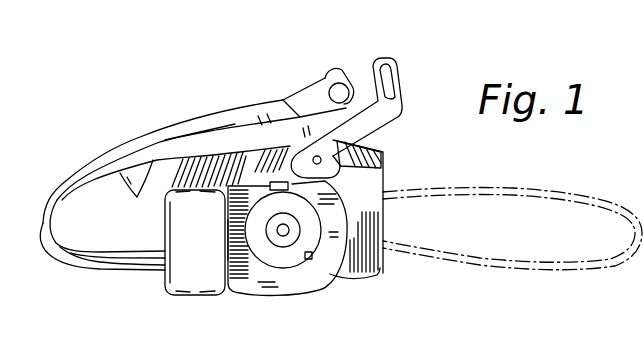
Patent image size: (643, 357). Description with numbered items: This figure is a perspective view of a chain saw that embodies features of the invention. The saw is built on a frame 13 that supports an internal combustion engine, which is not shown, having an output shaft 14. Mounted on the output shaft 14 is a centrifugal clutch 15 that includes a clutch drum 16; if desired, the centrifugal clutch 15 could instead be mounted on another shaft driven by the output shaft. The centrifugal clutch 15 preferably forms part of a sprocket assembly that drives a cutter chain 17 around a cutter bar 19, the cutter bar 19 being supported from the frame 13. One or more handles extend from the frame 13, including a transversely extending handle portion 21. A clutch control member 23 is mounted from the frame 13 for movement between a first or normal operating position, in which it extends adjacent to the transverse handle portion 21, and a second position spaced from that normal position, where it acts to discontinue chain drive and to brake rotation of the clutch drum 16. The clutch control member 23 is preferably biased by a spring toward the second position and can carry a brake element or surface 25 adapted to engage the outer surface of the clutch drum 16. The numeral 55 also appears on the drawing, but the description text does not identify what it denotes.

The frame 13 is at (362, 276).
The output shaft 14 is at (283, 233).
The centrifugal clutch 15 is at (308, 258).
The clutch drum 16 is at (318, 216).
The cutter chain 17 is at (566, 194).
The cutter bar 19 is at (520, 217).
The transversely extending handle portion 21 is at (333, 68).
The clutch control member 23 is at (405, 118).
The brake element 25 is at (278, 192).
The starter drum 55 is at (290, 268).